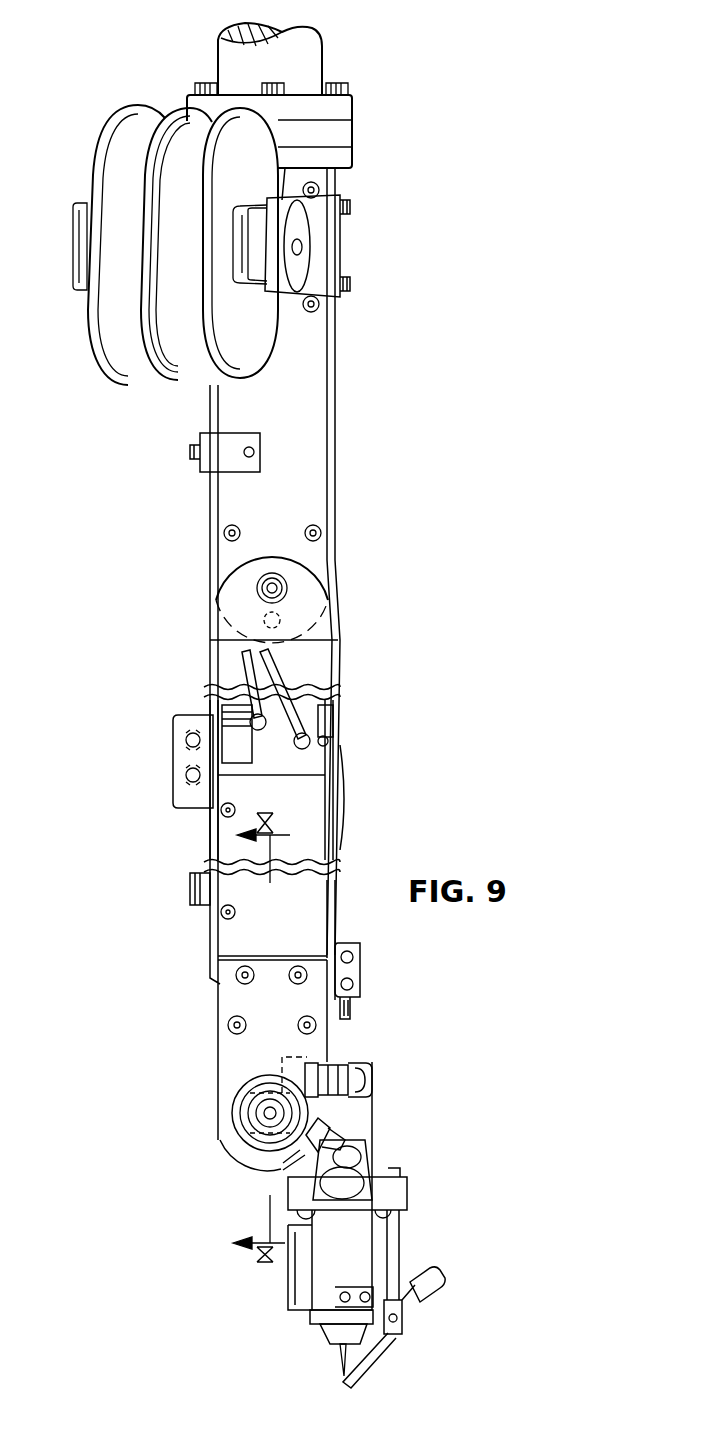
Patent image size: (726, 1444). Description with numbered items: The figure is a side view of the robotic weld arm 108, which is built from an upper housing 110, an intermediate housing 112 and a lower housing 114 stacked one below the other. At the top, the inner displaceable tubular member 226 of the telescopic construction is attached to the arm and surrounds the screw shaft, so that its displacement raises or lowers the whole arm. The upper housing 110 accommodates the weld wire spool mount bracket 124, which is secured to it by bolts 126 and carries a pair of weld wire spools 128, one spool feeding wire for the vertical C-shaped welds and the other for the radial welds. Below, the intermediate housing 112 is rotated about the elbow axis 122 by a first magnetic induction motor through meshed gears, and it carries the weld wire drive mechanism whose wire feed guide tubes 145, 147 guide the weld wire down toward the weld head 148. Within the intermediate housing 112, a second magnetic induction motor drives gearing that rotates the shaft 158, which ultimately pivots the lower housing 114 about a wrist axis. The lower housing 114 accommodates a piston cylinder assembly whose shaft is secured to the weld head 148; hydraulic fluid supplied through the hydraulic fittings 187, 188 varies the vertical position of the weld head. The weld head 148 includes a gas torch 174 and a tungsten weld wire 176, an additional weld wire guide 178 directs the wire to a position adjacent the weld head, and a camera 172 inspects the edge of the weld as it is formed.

The inner displaceable tubular member 226 is at (306, 57).
The weld wire spools 128 is at (100, 143).
The bolts 126 is at (350, 205).
The weld wire spool mount bracket 124 is at (330, 256).
The upper housing 110 is at (330, 442).
The robotic weld arm 108 is at (208, 547).
The elbow axis 122 is at (265, 587).
The wire feed guide tube 147 is at (243, 664).
The wire feed guide tube 145 is at (305, 662).
The intermediate housing 112 is at (325, 790).
The hydraulic fitting 187 is at (355, 1060).
The shaft 158 is at (268, 1113).
The hydraulic fitting 188 is at (345, 1138).
The lower housing 114 is at (375, 1140).
The weld wire guide 178 is at (398, 1240).
The camera 172 is at (310, 1250).
The weld head 148 is at (330, 1312).
The gas torch 174 is at (318, 1328).
The tungsten weld wire 176 is at (340, 1352).